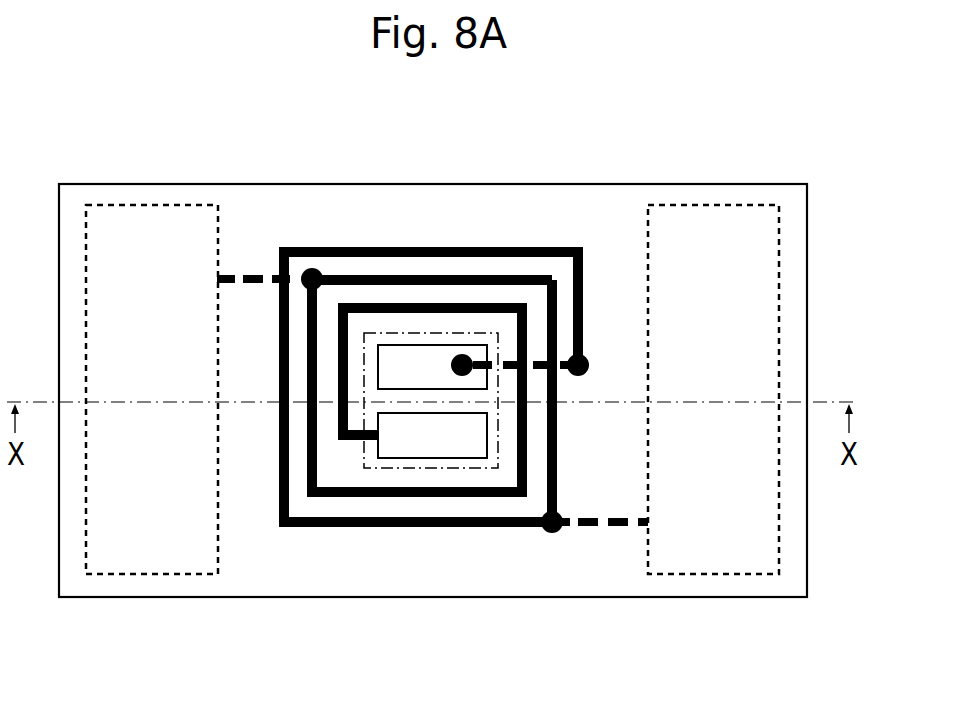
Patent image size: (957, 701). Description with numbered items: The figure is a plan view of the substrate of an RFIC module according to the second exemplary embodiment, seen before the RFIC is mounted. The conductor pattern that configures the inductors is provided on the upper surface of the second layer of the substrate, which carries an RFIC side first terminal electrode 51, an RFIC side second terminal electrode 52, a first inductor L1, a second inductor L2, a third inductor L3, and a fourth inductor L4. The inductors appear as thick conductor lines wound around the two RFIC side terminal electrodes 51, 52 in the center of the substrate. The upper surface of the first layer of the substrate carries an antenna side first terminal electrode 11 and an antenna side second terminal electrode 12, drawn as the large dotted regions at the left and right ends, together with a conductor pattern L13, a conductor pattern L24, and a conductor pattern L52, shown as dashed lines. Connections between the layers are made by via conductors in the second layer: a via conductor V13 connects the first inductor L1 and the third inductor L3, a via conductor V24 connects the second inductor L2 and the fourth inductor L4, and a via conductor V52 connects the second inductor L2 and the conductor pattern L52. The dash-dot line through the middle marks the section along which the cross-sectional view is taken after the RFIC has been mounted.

The antenna side first terminal electrode 11 is at (108, 367).
The antenna side second terminal electrode 12 is at (758, 366).
The RFIC side first terminal electrode 51 is at (442, 440).
The RFIC side second terminal electrode 52 is at (412, 360).
The first inductor L1 is at (353, 442).
The second inductor L2 is at (372, 247).
The third inductor L3 is at (478, 277).
The fourth inductor L4 is at (556, 437).
The conductor pattern L13 is at (253, 275).
The conductor pattern L24 is at (610, 528).
The conductor pattern L52 is at (535, 360).
The via conductor V13 is at (312, 268).
The via conductor V24 is at (549, 532).
The via conductor V52 is at (582, 358).